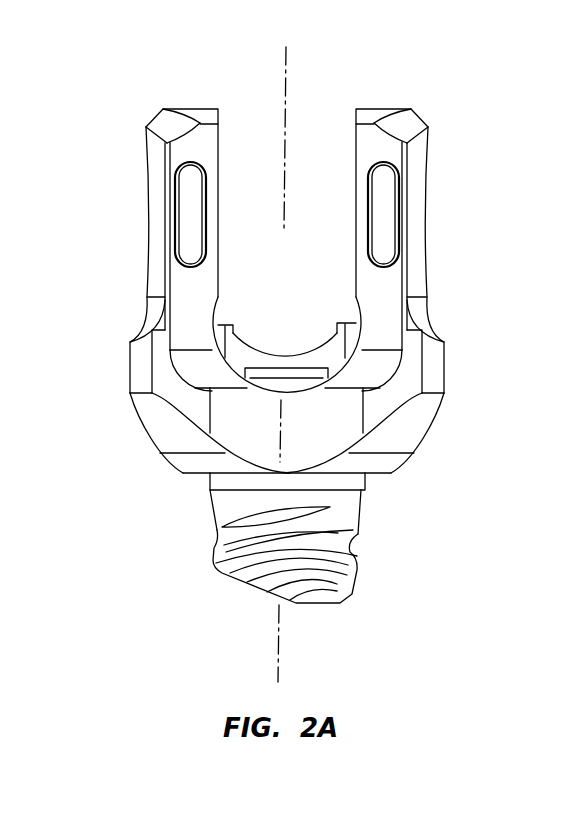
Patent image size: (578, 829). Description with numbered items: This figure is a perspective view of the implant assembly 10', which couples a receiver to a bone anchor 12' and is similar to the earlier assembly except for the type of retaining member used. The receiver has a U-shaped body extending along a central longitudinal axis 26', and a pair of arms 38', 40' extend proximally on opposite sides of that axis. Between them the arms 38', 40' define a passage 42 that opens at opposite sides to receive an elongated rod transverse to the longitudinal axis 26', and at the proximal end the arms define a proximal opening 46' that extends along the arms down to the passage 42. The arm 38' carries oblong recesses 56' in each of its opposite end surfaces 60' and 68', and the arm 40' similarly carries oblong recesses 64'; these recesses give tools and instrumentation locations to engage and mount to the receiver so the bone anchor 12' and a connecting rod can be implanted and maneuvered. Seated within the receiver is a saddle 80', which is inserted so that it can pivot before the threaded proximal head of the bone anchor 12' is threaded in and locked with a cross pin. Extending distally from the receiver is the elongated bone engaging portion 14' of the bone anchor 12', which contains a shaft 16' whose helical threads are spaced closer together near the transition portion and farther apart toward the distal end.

The implant assembly 10' is at (310, 356).
The bone anchor 12' is at (341, 538).
The elongated bone engaging portion 14' is at (332, 503).
The shaft 16' is at (316, 574).
The central longitudinal axis 26' is at (325, 355).
The arm 38' is at (289, 291).
The arm 40' is at (327, 417).
The passage 42 is at (263, 308).
The proximal opening 46' is at (217, 68).
The oblong recess 56' is at (148, 206).
The end surface 60' is at (140, 251).
The oblong recess 64' is at (431, 202).
The end surface 68' is at (425, 251).
The saddle 80' is at (201, 401).